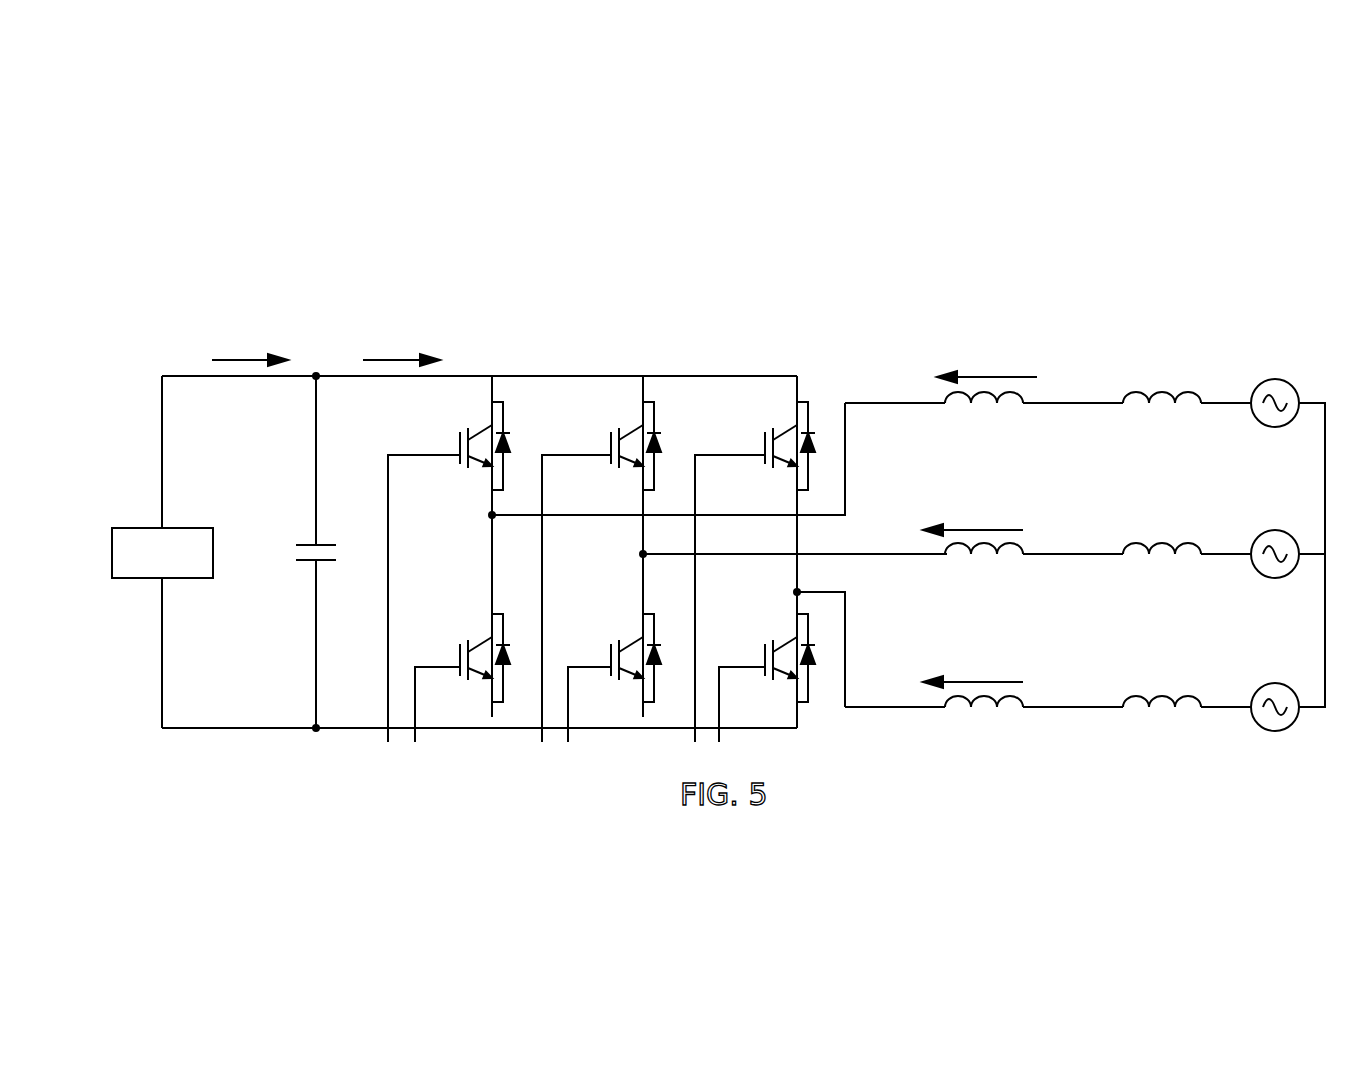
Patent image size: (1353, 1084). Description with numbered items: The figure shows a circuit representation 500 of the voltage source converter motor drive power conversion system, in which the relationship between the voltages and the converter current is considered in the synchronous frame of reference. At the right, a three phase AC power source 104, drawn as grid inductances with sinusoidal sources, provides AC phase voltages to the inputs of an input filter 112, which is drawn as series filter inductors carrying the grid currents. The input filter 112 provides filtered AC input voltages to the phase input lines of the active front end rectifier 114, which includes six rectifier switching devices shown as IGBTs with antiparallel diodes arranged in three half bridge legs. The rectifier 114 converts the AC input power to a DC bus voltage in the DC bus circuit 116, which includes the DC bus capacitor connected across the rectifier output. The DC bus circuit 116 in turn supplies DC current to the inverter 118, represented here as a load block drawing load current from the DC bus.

The circuit representation 500 is at (157, 223).
The AC power source 104 is at (1120, 365).
The input filter 112 is at (945, 345).
The active front end rectifier 114 is at (462, 326).
The DC bus circuit 116 is at (363, 308).
The inverter 118 is at (121, 527).